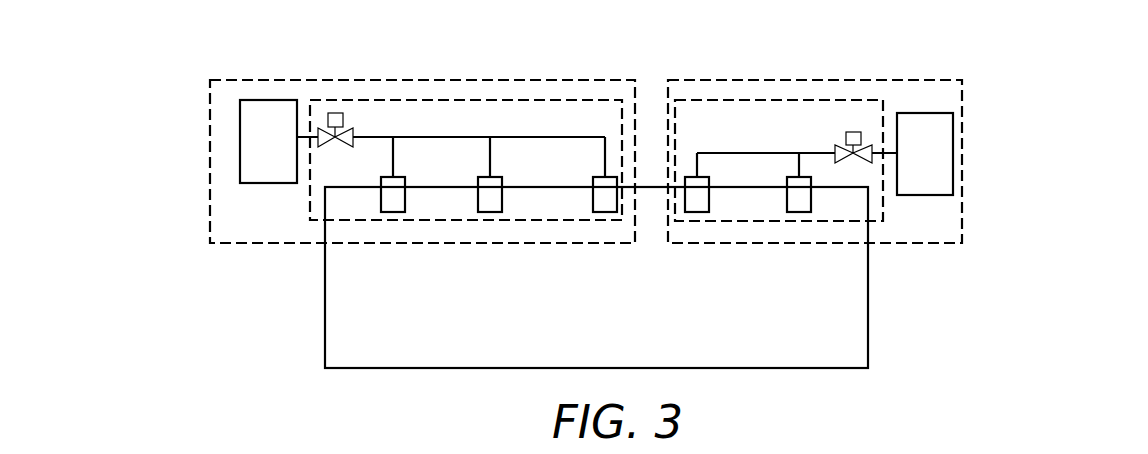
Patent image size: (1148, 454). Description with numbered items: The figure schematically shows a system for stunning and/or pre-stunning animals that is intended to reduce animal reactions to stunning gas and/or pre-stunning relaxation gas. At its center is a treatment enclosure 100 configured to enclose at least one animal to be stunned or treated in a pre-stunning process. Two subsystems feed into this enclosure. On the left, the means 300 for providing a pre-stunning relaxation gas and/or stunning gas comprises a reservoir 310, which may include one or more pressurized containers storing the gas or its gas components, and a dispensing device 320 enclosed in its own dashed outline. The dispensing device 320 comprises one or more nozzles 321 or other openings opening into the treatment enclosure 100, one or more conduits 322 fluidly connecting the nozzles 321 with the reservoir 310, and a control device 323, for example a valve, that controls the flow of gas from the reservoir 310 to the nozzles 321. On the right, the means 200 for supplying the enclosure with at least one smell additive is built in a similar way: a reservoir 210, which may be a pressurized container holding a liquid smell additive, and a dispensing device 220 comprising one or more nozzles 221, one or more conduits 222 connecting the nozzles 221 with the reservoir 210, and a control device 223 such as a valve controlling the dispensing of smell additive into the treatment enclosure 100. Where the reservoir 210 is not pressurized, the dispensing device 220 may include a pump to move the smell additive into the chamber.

The treatment enclosure 100 is at (325, 348).
The means for supplying the enclosure with at least one smell additive 200 is at (797, 80).
The reservoir 210 is at (930, 113).
The dispensing device 220 is at (823, 100).
The nozzles 221 is at (697, 212).
The conduits 222 is at (718, 153).
The control device 223 is at (853, 132).
The means for providing a pre-stunning relaxation gas and/or stunning gas 300 is at (210, 93).
The reservoir 310 is at (240, 152).
The dispensing device 320 is at (480, 100).
The nozzles 321 is at (390, 212).
The conduits 322 is at (577, 137).
The control device 323 is at (333, 113).